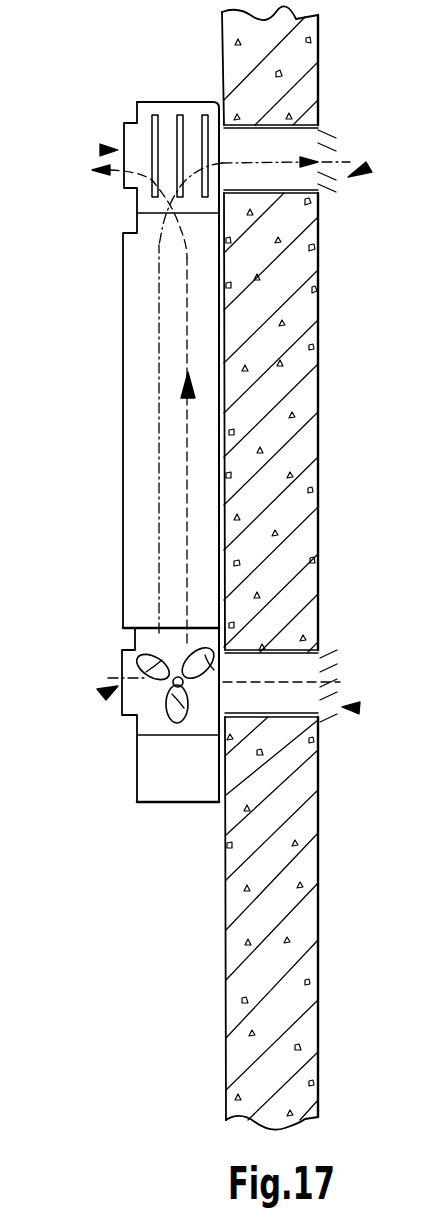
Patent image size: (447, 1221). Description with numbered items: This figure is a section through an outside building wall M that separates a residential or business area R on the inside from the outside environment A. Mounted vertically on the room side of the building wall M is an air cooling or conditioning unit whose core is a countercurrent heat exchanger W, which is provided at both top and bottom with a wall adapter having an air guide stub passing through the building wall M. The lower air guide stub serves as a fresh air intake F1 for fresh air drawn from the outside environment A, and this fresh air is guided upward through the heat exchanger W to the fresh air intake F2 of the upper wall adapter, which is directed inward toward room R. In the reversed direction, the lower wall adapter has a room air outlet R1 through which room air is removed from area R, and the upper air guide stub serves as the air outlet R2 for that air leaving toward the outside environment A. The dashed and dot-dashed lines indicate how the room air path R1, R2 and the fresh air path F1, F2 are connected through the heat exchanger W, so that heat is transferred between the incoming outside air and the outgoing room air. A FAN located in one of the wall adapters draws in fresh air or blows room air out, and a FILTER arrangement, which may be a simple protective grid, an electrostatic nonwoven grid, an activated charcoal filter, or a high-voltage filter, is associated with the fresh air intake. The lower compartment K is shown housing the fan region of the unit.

The building wall M is at (312, 1066).
The filter arrangement FILTER is at (148, 118).
The fan FAN is at (146, 662).
The fan box / housing compartment K is at (170, 790).
The heat exchanger W is at (178, 440).
The air outlet R2 is at (364, 167).
The fresh air intake F2 is at (100, 150).
The room air outlet R1 is at (101, 695).
The fresh air intake F1 is at (358, 708).
The residential or business area R is at (192, 958).
The outside environment A is at (372, 958).